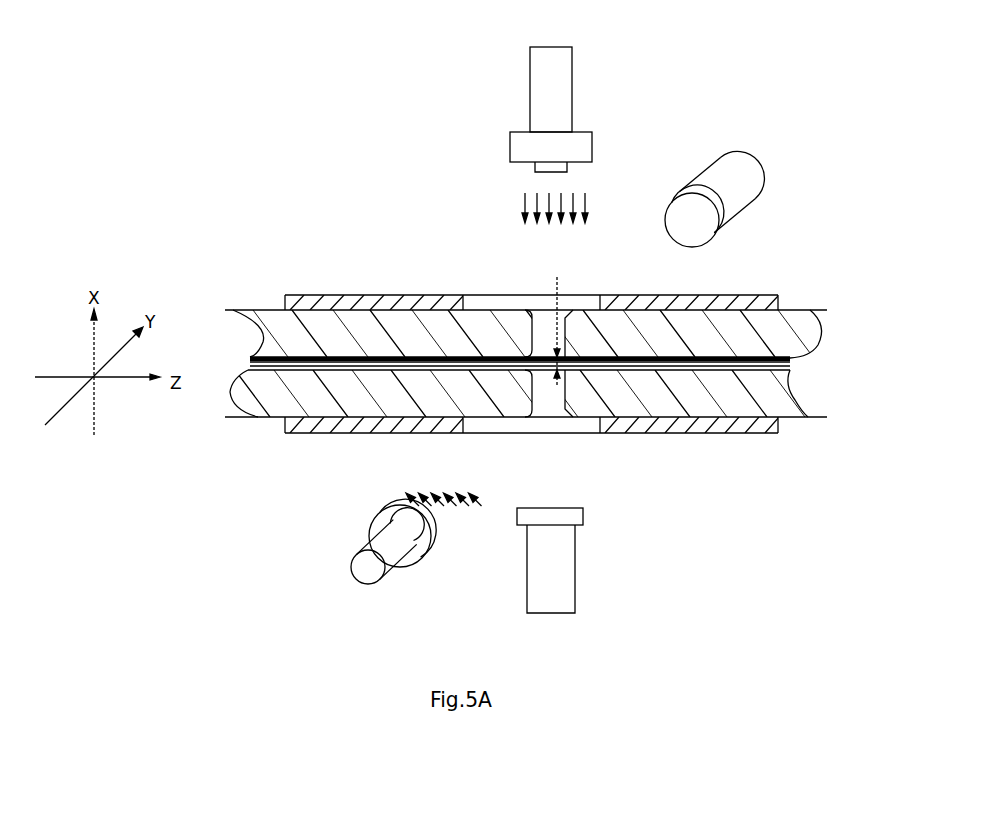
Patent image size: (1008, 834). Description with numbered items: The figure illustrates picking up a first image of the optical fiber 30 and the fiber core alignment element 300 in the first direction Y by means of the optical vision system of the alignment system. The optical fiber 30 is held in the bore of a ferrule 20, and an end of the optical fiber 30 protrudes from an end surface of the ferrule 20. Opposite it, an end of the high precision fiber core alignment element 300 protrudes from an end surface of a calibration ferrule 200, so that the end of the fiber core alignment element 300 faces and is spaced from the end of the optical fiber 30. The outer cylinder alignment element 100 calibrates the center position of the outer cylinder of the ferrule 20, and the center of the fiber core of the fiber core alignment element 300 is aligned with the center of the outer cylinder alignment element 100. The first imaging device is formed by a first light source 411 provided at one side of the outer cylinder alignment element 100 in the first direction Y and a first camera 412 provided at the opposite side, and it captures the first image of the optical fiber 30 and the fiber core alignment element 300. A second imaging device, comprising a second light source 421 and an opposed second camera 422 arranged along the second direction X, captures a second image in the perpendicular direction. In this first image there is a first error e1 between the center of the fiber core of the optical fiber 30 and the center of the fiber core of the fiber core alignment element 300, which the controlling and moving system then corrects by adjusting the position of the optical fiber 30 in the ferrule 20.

The ferrule 20 is at (368, 332).
The optical fiber 30 is at (402, 373).
The outer cylinder alignment element 100 is at (678, 297).
The calibration ferrule 200 is at (782, 330).
The fiber core alignment element 300 is at (701, 372).
The first light source 411 is at (355, 559).
The first camera 412 is at (753, 167).
The second light source 421 is at (563, 95).
The second camera 422 is at (565, 575).
The first error e1 is at (557, 277).